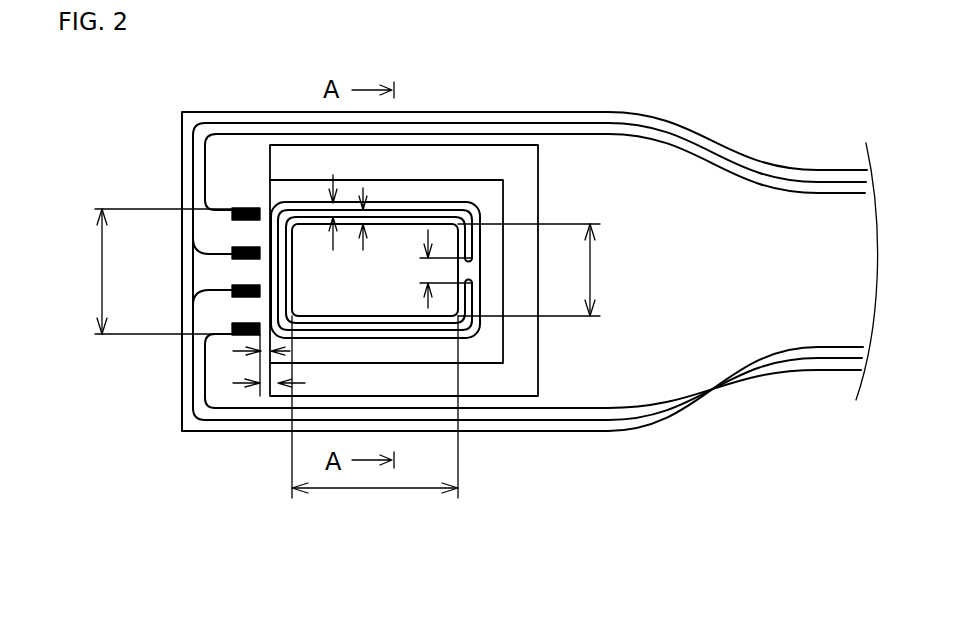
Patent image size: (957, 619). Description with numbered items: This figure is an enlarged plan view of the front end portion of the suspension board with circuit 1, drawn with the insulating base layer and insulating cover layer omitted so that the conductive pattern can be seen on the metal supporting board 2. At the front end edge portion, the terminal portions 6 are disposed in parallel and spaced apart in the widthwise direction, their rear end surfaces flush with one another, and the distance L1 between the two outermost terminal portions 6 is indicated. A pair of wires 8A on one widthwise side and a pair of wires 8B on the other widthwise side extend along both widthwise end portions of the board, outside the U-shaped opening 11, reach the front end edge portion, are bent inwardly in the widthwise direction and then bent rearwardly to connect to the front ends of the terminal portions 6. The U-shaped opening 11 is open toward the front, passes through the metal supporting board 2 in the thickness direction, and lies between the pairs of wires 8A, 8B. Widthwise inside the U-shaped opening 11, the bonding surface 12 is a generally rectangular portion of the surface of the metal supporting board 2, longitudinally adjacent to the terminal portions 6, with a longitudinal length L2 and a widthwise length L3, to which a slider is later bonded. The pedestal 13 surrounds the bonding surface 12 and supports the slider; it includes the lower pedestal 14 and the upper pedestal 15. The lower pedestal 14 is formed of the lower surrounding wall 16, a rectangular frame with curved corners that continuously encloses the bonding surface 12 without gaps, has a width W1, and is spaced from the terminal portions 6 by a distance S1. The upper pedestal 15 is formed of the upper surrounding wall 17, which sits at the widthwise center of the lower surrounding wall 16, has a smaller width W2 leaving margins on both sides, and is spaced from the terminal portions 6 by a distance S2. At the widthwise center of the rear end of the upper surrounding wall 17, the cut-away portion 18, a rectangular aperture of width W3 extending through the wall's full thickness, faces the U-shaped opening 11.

The suspension board with circuit 1 is at (608, 513).
The metal supporting board 2 is at (802, 373).
The terminal portions 6 is at (232, 326).
The pair of wires on one widthwise side 8A is at (712, 160).
The pair of wires on the other widthwise side 8B is at (686, 392).
The U-shaped opening 11 is at (481, 150).
The bonding surface 12 is at (347, 302).
The pedestal 13 is at (388, 342).
The lower pedestal 14 is at (435, 183).
The upper pedestal 15 is at (410, 210).
The lower surrounding wall 16 is at (322, 205).
The upper surrounding wall 17 is at (285, 218).
The cut-away portion 18 is at (482, 268).
The distance between outermost terminal portions L1 is at (147, 271).
The longitudinal length of the bonding surface L2 is at (375, 419).
The widthwise length of the bonding surface L3 is at (542, 270).
The distance between lower surrounding wall and terminal portions S1 is at (264, 351).
The distance between upper surrounding wall and terminal portions S2 is at (264, 383).
The width of the lower surrounding wall W1 is at (330, 213).
The width of the upper surrounding wall W2 is at (371, 216).
The width of the cut-away portion W3 is at (425, 270).